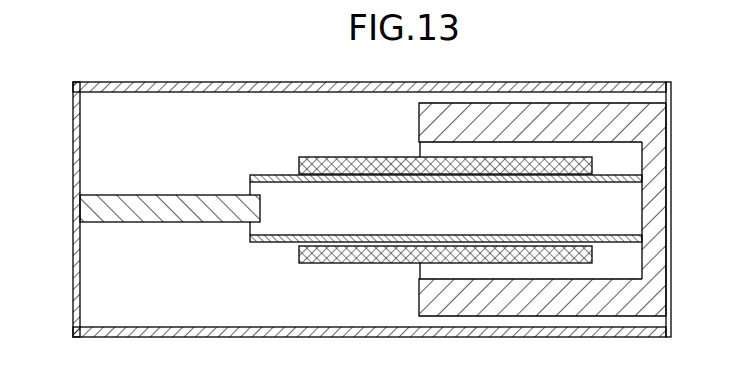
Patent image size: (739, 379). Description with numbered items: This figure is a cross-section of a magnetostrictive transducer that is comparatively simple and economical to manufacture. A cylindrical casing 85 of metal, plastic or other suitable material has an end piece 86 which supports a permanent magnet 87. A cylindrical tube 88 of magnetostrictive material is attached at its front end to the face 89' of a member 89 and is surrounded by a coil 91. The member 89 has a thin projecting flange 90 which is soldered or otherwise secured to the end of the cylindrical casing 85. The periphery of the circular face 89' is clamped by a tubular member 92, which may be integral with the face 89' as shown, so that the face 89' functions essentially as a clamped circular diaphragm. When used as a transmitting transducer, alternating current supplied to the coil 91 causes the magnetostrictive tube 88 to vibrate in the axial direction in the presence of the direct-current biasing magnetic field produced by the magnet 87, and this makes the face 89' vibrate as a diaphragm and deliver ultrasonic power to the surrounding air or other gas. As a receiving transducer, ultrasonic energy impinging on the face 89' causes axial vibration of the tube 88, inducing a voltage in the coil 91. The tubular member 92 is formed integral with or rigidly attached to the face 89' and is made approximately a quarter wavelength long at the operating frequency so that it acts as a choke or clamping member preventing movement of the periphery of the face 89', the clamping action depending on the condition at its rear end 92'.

The cylindrical casing 85 is at (210, 88).
The end piece 86 is at (73, 172).
The permanent magnet 87 is at (160, 205).
The cylindrical tube 88 is at (275, 152).
The member 89 is at (550, 208).
The face 89' is at (682, 209).
The thin projecting flange 90 is at (671, 92).
The coil 91 is at (363, 156).
The tubular member 92 is at (542, 208).
The rear end 92' is at (397, 190).